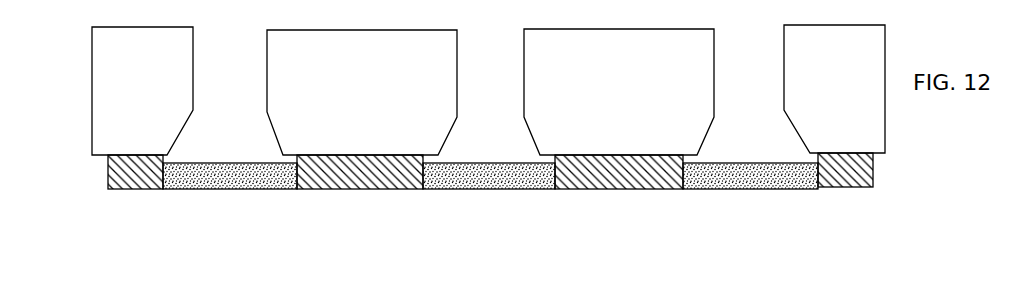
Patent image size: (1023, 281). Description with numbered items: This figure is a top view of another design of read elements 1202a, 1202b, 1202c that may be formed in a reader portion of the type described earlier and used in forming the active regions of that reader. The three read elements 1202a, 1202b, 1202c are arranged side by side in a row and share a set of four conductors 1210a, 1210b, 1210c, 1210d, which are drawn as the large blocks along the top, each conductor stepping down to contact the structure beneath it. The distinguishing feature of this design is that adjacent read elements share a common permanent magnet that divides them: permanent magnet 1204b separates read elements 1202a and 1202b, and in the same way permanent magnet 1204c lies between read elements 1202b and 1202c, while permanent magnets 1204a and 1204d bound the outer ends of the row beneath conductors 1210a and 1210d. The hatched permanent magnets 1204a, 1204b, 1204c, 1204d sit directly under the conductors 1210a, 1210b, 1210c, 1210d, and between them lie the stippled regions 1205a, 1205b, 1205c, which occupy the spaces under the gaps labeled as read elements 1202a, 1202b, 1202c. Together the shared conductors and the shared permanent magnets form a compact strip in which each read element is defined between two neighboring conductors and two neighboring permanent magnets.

The read element 1202a is at (252, 38).
The read element 1202b is at (515, 45).
The read element 1202c is at (773, 41).
The permanent magnet 1204a is at (135, 189).
The permanent magnet 1204b is at (360, 189).
The permanent magnet 1204c is at (618, 189).
The permanent magnet 1204d is at (847, 189).
The dielectric fill 1205a is at (217, 189).
The dielectric fill 1205b is at (490, 189).
The dielectric fill 1205c is at (742, 189).
The conductor 1210a is at (142, 91).
The conductor 1210b is at (362, 92).
The conductor 1210c is at (619, 92).
The conductor 1210d is at (834, 89).